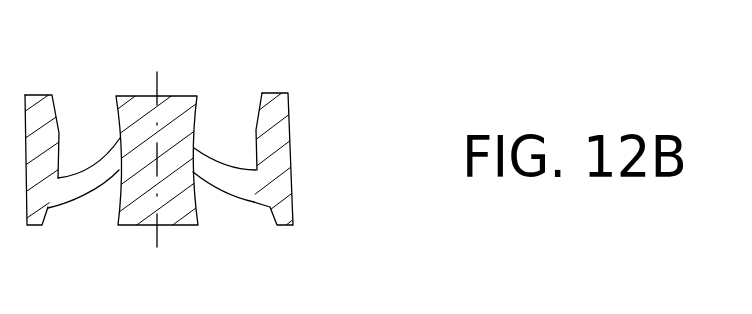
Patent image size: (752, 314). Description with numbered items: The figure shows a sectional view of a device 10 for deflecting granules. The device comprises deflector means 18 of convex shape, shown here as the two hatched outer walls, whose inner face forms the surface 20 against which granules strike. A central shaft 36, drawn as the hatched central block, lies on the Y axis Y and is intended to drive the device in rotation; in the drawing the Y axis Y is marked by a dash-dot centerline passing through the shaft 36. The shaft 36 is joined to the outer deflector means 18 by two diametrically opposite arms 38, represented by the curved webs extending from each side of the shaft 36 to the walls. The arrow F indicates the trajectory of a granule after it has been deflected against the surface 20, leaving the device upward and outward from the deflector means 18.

The cushioning element 10 is at (307, 157).
The deflector means 18 is at (66, 111).
The surface 20 is at (60, 133).
The central shaft 36 is at (178, 102).
The arms 38 is at (229, 186).
The arrow F is at (267, 109).
The Y axis Y is at (155, 247).